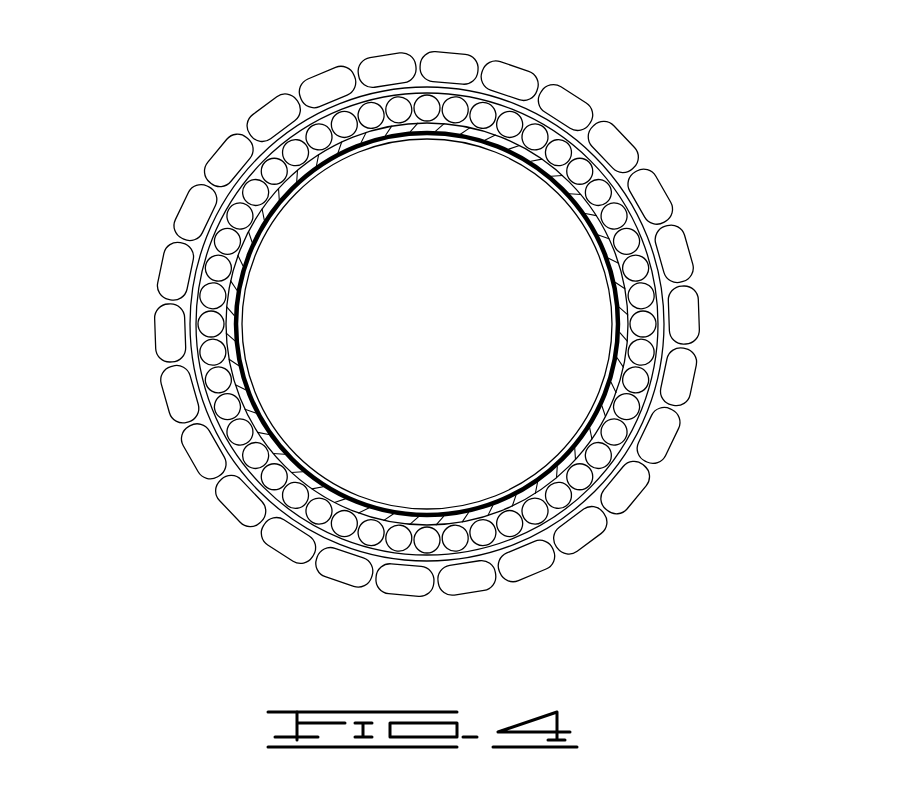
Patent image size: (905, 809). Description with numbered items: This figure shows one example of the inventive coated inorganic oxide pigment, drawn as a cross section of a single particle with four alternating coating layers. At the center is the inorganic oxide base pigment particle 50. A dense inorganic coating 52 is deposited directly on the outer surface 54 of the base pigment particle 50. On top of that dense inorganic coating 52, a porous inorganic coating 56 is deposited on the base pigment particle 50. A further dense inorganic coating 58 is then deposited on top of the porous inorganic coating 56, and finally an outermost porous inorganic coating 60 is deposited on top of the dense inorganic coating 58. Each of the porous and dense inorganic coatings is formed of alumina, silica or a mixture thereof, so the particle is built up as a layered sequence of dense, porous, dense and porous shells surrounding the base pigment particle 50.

The inorganic oxide base pigment particle 50 is at (414, 330).
The dense inorganic coating 52 is at (433, 121).
The outer surface 54 is at (556, 194).
The porous inorganic coating 56 is at (297, 150).
The dense inorganic coating 58 is at (557, 122).
The porous inorganic coating 60 is at (323, 87).